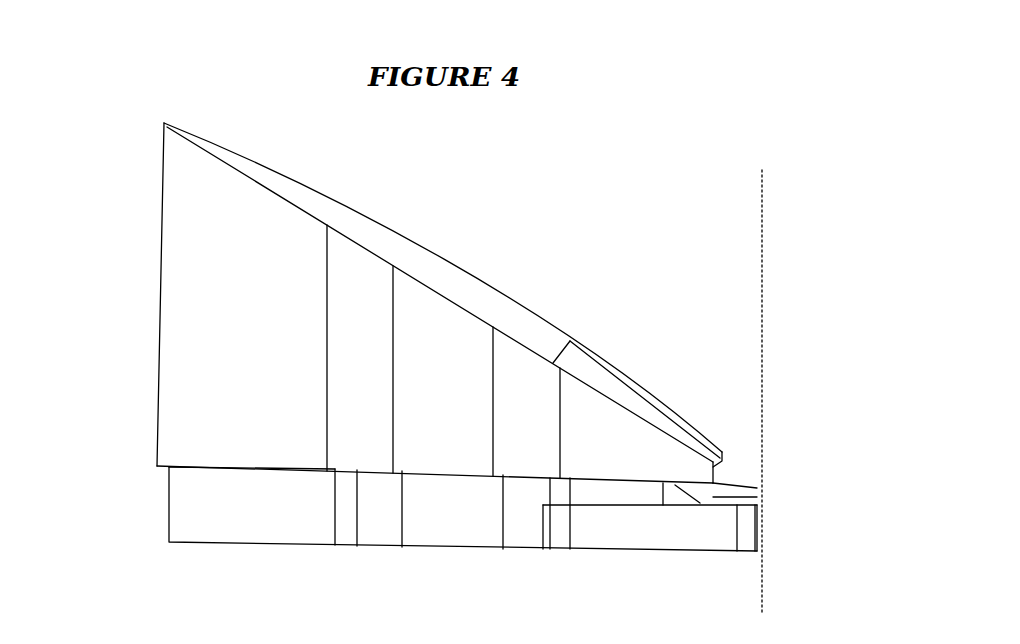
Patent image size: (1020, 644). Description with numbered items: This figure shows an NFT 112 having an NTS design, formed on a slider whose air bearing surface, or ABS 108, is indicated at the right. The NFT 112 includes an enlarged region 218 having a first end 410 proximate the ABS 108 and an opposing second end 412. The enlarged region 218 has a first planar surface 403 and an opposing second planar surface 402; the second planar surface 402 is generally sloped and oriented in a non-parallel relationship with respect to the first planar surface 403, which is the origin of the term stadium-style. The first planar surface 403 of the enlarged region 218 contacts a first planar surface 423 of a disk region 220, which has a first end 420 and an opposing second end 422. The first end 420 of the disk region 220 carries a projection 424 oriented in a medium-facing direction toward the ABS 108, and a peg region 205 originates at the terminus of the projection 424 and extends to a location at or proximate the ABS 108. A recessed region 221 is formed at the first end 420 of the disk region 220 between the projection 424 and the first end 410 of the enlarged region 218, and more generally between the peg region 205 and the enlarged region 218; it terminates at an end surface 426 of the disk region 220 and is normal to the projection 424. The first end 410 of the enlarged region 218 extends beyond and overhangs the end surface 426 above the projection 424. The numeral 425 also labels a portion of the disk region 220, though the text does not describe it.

The ABS 108 is at (765, 227).
The NFT 112 is at (535, 225).
The peg region 205 is at (743, 540).
The enlarged region 218 is at (178, 178).
The disk region 220 is at (227, 508).
The recessed region 221 is at (718, 486).
The second planar surface 402 is at (323, 197).
The first planar surface 403 is at (218, 463).
The first end 410 is at (723, 462).
The second end 412 is at (158, 287).
The first end 420 is at (733, 498).
The second end 422 is at (168, 503).
The first planar surface 423 is at (447, 477).
The projection 424 is at (717, 497).
The slot 425 is at (363, 545).
The end surface 426 is at (667, 483).